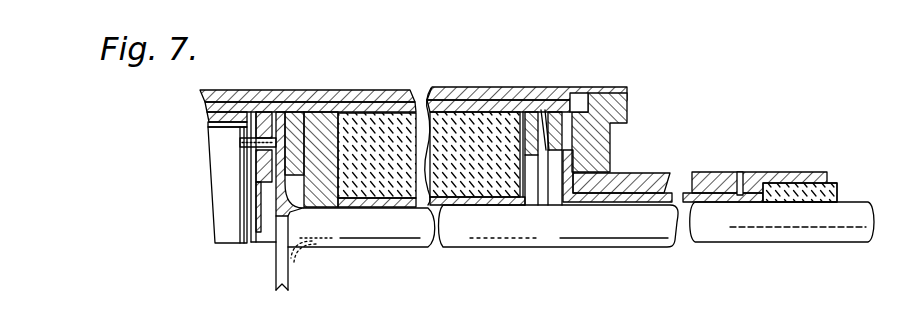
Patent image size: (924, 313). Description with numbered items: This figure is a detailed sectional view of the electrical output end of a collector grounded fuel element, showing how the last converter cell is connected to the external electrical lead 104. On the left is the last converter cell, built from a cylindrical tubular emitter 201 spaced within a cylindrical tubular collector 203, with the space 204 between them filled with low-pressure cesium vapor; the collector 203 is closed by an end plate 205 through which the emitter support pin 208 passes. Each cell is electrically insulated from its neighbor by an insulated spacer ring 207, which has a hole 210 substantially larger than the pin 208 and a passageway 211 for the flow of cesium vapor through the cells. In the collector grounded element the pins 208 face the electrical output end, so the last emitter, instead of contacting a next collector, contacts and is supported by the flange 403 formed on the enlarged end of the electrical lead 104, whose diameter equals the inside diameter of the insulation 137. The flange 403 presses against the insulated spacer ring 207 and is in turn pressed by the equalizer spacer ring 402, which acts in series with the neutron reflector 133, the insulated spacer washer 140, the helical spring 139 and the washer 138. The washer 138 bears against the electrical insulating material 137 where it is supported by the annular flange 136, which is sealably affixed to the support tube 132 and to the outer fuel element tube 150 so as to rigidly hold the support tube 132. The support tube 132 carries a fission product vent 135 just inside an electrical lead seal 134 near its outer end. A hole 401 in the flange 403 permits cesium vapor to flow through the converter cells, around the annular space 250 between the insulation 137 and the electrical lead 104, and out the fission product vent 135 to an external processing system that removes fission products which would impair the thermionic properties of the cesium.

The outer fuel element tube 150 is at (208, 91).
The insulated spacer ring 207 is at (262, 138).
The hole 210 is at (305, 112).
The equalizer spacer ring 402 is at (377, 91).
The collector 203 is at (206, 114).
The space 204 is at (210, 125).
The support pin 208 is at (242, 145).
The emitter 201 is at (216, 200).
The end plate 205 is at (258, 243).
The passageway 211 is at (271, 236).
The hole 401 is at (290, 214).
The flange 403 is at (286, 273).
The neutron reflector 133 is at (424, 108).
The electrical insulating material 137 is at (481, 88).
The insulated spacer washer 140 is at (531, 116).
The helical spring 139 is at (542, 106).
The washer 138 is at (583, 98).
The annular flange 136 is at (618, 112).
The support tube 132 is at (640, 175).
The annular space 250 is at (446, 212).
The fission product vent 135 is at (741, 172).
The electrical lead seal 134 is at (831, 183).
The electrical lead 104 is at (843, 210).